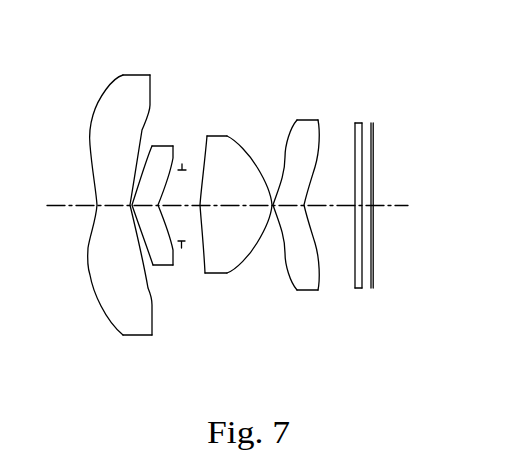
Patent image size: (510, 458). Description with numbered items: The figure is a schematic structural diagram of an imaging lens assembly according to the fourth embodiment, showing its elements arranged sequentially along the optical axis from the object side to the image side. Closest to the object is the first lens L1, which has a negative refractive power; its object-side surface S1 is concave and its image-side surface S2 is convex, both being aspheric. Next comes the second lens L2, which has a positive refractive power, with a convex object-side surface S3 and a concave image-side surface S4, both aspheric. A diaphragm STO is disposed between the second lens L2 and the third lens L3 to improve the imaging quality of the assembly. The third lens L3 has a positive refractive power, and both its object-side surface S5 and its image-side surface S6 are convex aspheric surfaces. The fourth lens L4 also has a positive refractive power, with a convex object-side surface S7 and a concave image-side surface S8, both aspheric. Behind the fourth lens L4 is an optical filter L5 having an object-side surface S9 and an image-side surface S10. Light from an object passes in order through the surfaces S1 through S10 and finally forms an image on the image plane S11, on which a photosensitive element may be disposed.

The first lens L1 is at (135, 75).
The second lens L2 is at (152, 146).
The third lens L3 is at (210, 136).
The fourth lens L4 is at (305, 120).
The optical filter L5 is at (357, 123).
The diaphragm STO is at (181, 168).
The object-side surface of the first lens S1 is at (98, 207).
The image-side surface of the first lens S2 is at (128, 207).
The object-side surface of the second lens S3 is at (130, 207).
The image-side surface of the second lens S4 is at (158, 207).
The object-side surface of the third lens S5 is at (200, 207).
The image-side surface of the third lens S6 is at (272, 207).
The object-side surface of the fourth lens S7 is at (275, 207).
The image-side surface of the fourth lens S8 is at (305, 207).
The object-side surface of the optical filter S9 is at (355, 207).
The image-side surface of the optical filter S10 is at (362, 207).
The image plane S11 is at (372, 207).